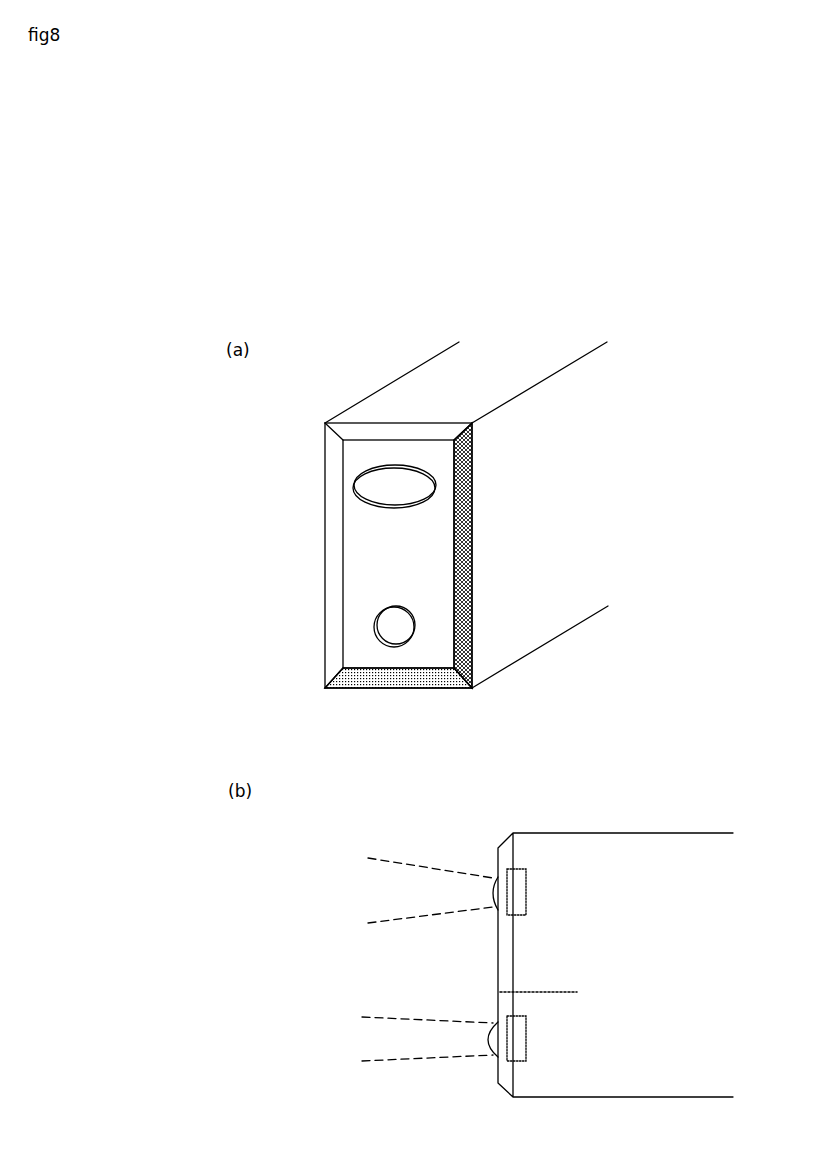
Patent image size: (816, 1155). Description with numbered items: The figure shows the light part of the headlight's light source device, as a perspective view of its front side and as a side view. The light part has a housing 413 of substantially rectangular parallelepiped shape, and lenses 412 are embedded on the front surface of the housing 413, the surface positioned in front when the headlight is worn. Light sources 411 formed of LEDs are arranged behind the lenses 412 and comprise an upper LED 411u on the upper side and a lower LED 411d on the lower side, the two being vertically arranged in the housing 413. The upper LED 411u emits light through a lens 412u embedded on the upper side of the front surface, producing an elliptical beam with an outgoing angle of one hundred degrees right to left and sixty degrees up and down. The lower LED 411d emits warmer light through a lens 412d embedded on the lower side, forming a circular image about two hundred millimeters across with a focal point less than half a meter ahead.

The housing 413 is at (418, 392).
The lenses 412 is at (331, 741).
The upper lens 412u is at (382, 483).
The lower lens 412d is at (371, 817).
The light sources 411 is at (625, 965).
The upper LED 411u is at (525, 897).
The lower LED 411d is at (517, 1045).